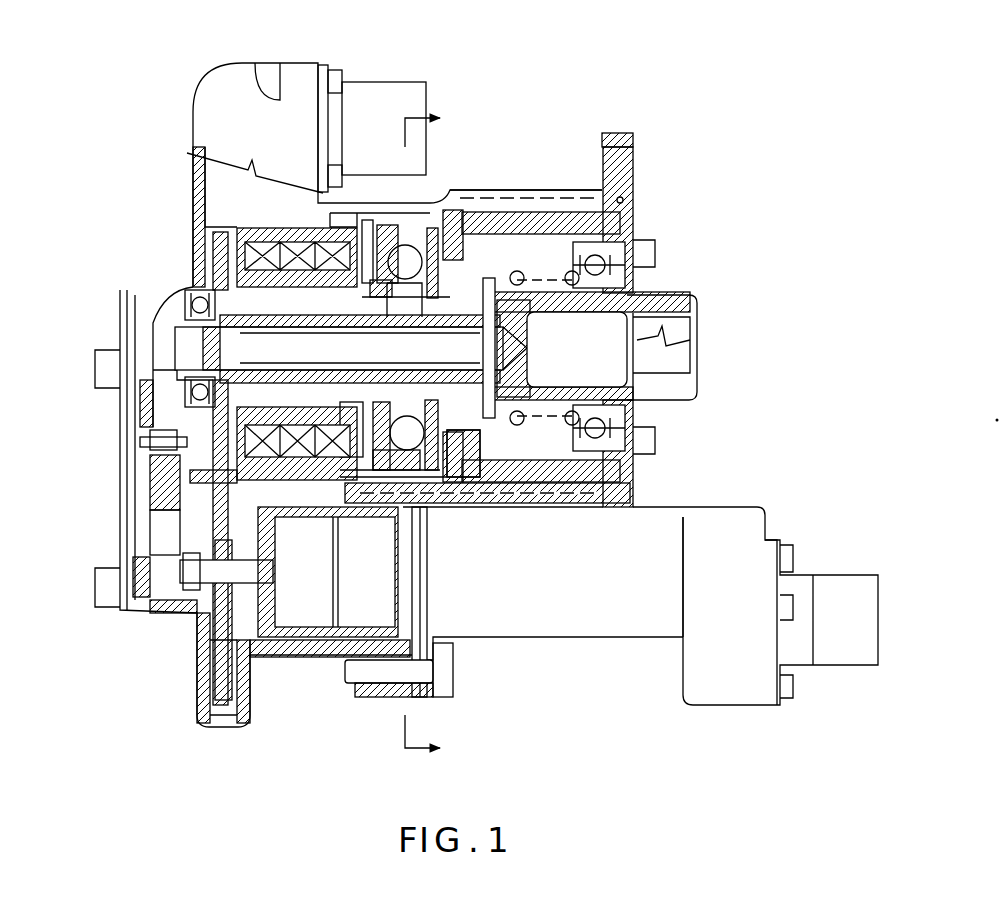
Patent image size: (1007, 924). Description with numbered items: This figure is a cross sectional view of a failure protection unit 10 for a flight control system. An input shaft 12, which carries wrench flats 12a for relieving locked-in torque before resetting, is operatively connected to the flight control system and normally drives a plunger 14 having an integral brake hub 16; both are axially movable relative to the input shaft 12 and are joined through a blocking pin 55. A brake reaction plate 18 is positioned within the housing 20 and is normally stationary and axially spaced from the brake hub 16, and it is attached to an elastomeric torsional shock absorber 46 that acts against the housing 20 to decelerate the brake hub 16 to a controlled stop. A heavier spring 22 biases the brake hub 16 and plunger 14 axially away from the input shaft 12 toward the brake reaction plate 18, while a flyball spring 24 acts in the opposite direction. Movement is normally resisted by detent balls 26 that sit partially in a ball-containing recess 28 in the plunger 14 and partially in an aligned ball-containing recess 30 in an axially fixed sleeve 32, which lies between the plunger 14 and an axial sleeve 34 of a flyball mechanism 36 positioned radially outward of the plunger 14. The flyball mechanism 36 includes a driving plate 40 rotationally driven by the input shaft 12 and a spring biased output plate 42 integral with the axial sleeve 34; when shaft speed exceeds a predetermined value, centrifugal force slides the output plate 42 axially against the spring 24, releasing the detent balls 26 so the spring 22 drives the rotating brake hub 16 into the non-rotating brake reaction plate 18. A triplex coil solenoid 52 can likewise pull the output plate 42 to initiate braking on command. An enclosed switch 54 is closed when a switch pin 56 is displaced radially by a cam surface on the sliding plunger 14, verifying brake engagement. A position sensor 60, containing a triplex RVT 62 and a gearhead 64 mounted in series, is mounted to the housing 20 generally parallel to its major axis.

The failure protection unit 10 is at (530, 135).
The input shaft 12 is at (655, 410).
The wrench flats 12a is at (680, 300).
The plunger 14 is at (192, 338).
The brake hub 16 is at (497, 430).
The brake reaction plate 18 is at (460, 450).
The housing 20 is at (555, 192).
The spring 22 is at (628, 250).
The spring 24 is at (207, 253).
The detent balls 26 is at (350, 325).
The ball-containing recess 28 is at (340, 288).
The ball-containing recess 30 is at (325, 510).
The axially fixed sleeve 32 is at (250, 380).
The axial sleeve 34 is at (330, 177).
The flyball mechanism 36 is at (352, 225).
The driving plate 40 is at (440, 218).
The output plate 42 is at (385, 235).
The elastomeric torsional shock absorber 46 is at (593, 225).
The triplex coil solenoid 52 is at (263, 447).
The switch 54 is at (140, 483).
The blocking pin 55 is at (680, 300).
The switch pin 56 is at (163, 377).
The position sensor 60 is at (598, 645).
The triplex RVT 62 is at (717, 690).
The gearhead 64 is at (200, 705).